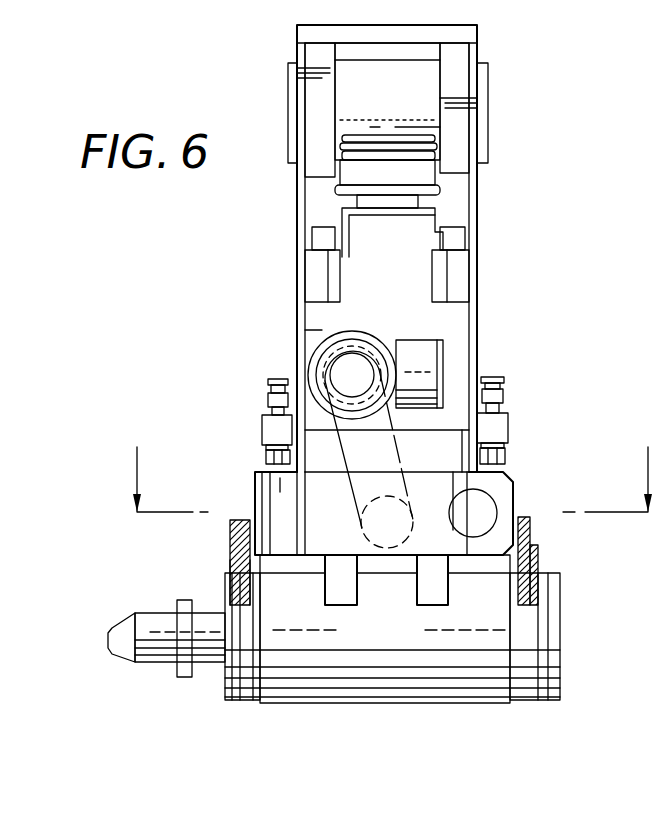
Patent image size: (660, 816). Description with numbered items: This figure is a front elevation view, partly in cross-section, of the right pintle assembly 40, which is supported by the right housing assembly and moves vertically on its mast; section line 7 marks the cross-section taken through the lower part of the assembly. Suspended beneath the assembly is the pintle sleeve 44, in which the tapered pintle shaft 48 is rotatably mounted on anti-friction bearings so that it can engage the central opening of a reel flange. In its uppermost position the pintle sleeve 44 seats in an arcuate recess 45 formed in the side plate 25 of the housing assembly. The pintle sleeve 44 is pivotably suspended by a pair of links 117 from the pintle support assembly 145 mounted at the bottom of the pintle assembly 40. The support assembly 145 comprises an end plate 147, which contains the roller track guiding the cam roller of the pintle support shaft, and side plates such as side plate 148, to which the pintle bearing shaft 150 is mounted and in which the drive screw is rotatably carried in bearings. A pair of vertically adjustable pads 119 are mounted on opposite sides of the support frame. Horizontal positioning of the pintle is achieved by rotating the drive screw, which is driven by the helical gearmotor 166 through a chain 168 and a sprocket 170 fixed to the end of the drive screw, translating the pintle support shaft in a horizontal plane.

The right pintle assembly 40 is at (503, 198).
The pintle sleeve 44 is at (485, 690).
The arcuate recess 45 is at (229, 571).
The tapered pintle shaft 48 is at (150, 632).
The side plate 25 is at (236, 527).
The links 117 is at (428, 582).
The vertically adjustable pads 119 is at (276, 378).
The pintle support assembly 145 is at (521, 464).
The end plate 147 is at (255, 490).
The side plate 148 is at (449, 465).
The pintle bearing shaft 150 is at (484, 513).
The helical gearmotor 166 is at (401, 356).
The chain 168 is at (364, 472).
The sprocket 170 is at (384, 524).
The section line 7- 7 is at (393, 464).